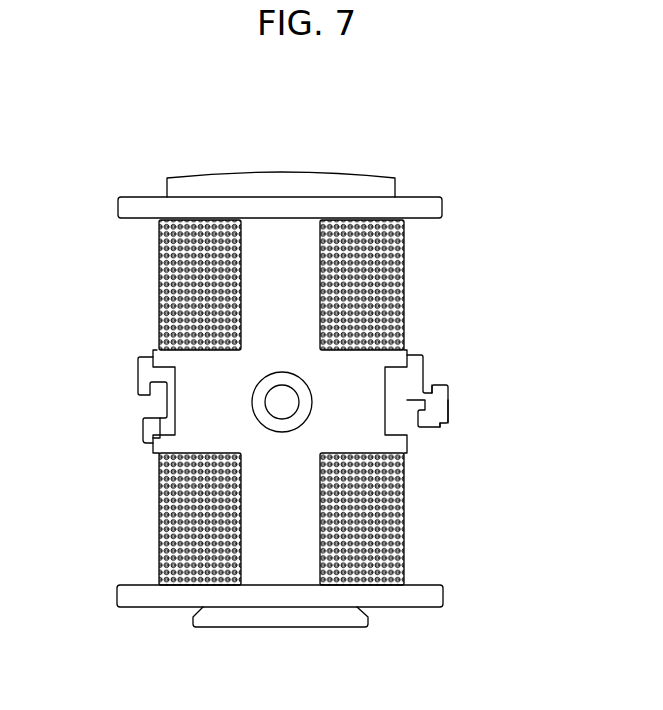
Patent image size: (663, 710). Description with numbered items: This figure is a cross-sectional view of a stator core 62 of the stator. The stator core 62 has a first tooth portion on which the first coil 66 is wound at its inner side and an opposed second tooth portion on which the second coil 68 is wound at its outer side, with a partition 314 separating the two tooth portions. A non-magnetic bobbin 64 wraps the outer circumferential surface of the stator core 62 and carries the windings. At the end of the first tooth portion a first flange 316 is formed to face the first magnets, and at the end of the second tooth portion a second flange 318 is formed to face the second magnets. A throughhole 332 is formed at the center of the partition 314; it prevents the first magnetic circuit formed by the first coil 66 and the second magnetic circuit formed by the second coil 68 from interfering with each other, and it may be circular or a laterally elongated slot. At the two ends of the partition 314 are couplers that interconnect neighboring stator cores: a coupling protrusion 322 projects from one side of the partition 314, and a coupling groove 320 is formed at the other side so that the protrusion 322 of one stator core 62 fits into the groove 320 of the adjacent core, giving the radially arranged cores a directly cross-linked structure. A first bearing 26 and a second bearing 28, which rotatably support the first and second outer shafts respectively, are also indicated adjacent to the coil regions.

The stator core 62 is at (417, 160).
The second flange 318 is at (282, 172).
The first flange 316 is at (320, 615).
The non-magnetic bobbin 64 is at (290, 508).
The throughhole 332 is at (282, 402).
The first bearing 26 is at (160, 251).
The second coil 68 is at (387, 287).
The second bearing 28 is at (160, 512).
The first coil 66 is at (385, 543).
The coupling groove 320 is at (160, 417).
The partition 314 is at (412, 377).
The coupling protrusion 322 is at (443, 403).